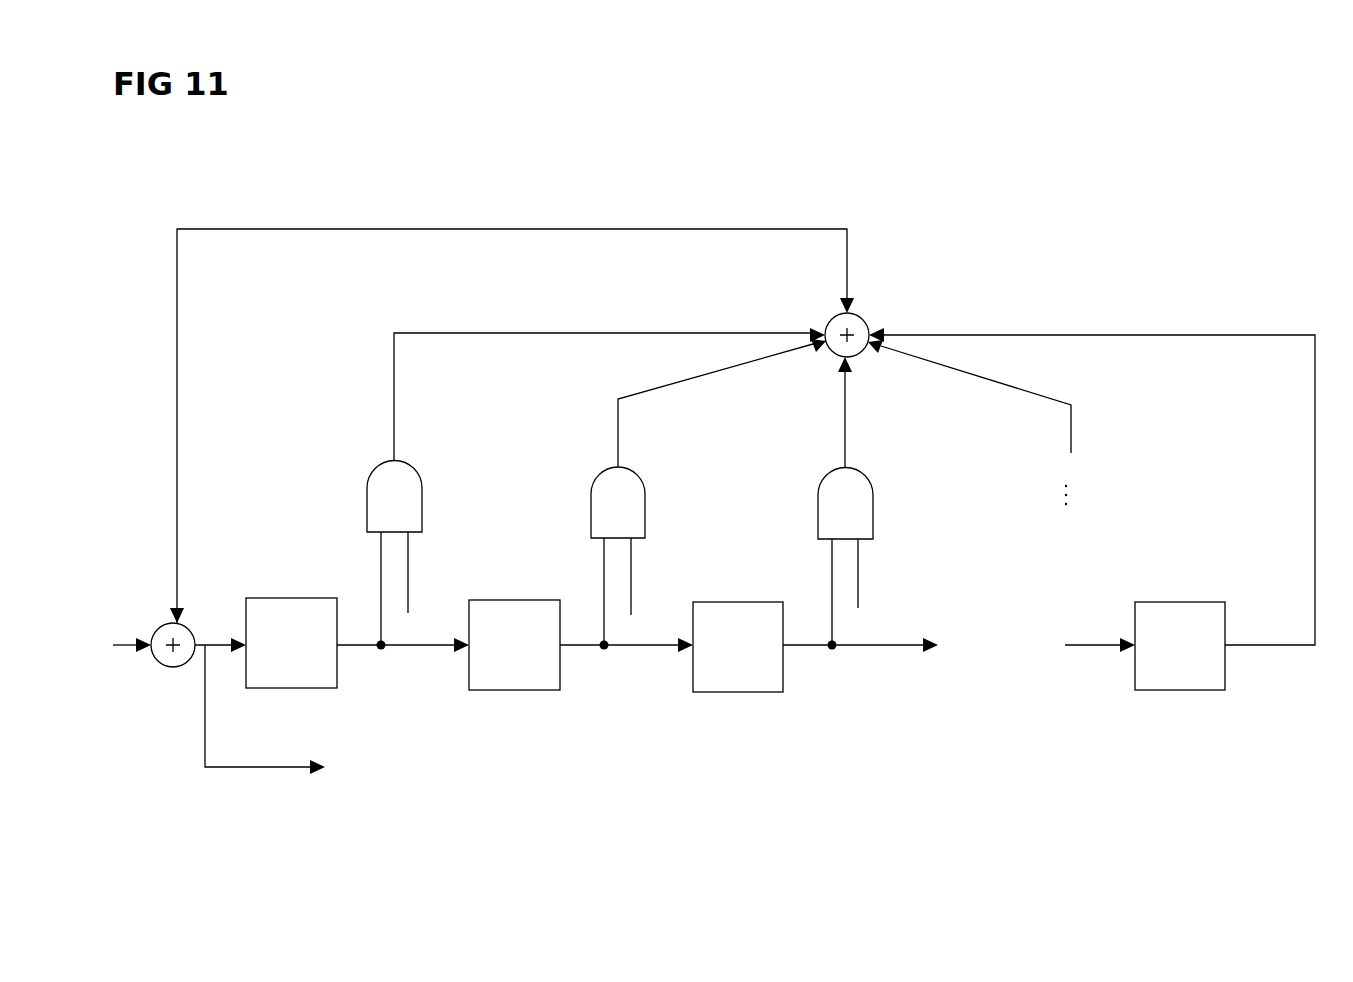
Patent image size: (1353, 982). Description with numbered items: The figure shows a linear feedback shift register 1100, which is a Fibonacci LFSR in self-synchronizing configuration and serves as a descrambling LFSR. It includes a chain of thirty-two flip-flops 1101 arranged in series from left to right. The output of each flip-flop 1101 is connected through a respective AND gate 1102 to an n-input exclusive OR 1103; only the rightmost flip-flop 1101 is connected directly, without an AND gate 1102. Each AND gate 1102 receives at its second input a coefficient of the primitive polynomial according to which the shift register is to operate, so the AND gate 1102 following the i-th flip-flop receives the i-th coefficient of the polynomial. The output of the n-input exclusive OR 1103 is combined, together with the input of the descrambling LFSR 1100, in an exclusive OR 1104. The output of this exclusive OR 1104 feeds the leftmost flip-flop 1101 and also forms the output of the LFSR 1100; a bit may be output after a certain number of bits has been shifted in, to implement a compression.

The linear feedback shift register 1100 is at (1207, 128).
The flip-flop 1101 is at (292, 598).
The AND gate 1102 is at (408, 462).
The n-input exclusive OR 1103 is at (858, 308).
The exclusive OR 1104 is at (170, 622).